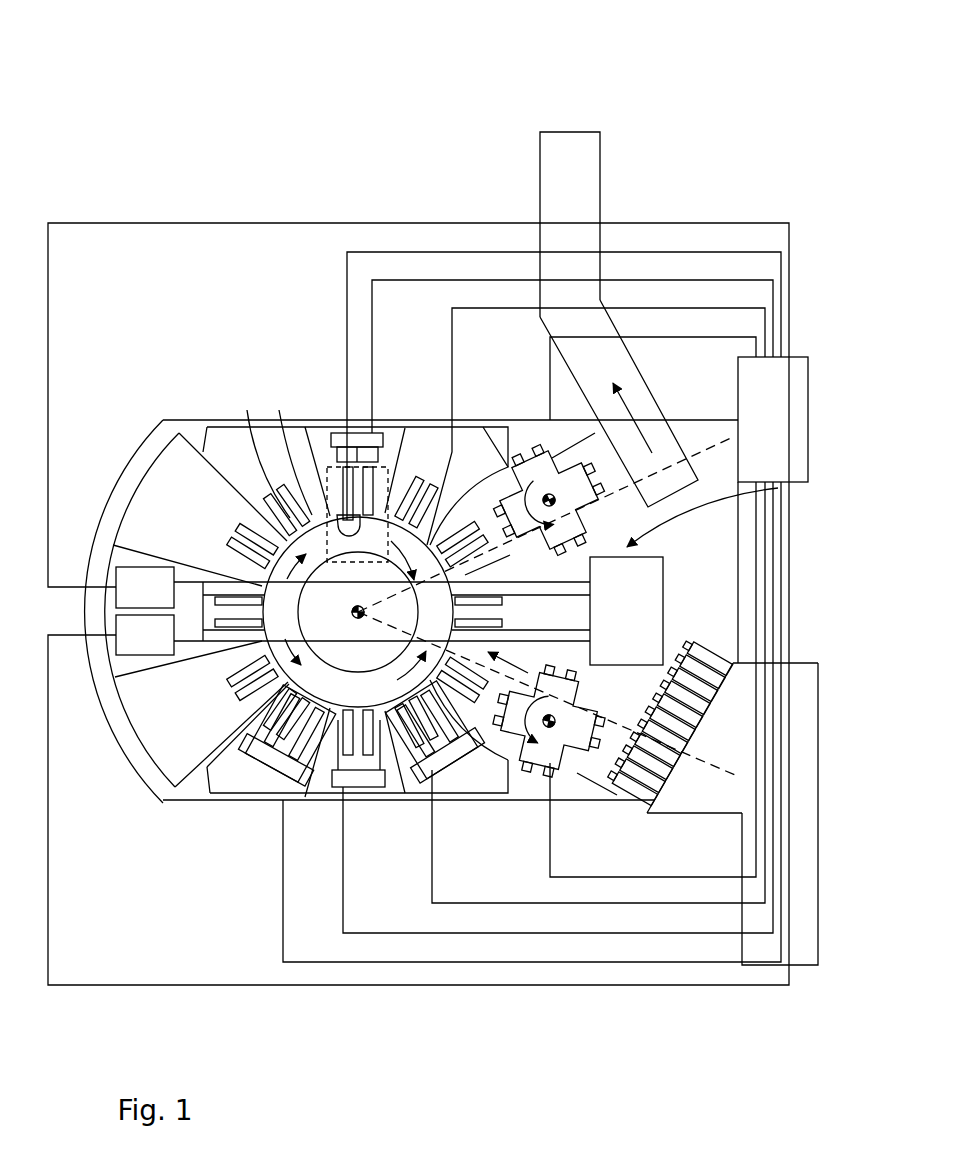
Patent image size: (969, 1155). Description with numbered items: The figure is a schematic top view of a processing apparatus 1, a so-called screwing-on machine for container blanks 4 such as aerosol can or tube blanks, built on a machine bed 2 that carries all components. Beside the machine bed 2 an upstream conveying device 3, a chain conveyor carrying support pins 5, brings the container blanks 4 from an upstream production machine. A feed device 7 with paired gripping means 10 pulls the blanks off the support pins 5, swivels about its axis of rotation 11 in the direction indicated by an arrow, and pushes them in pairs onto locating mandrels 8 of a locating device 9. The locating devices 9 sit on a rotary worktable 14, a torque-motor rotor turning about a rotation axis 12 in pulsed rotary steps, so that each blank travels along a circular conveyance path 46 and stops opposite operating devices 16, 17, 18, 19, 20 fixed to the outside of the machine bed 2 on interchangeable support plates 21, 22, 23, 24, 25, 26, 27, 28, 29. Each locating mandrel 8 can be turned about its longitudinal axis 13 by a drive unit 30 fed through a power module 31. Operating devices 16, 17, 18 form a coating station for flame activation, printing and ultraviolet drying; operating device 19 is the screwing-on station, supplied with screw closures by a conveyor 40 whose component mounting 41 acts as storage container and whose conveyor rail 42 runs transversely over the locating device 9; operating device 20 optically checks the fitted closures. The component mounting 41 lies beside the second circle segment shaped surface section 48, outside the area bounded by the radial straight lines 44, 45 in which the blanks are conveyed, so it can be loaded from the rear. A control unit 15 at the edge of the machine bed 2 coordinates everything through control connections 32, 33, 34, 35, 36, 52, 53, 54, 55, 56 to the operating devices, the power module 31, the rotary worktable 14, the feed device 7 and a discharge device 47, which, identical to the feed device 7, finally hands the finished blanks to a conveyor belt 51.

The processing apparatus 1 is at (398, 158).
The machine bed 2 is at (118, 733).
The upstream conveying device 3 is at (672, 826).
The container blanks 4 is at (628, 782).
The support pins 5 is at (718, 665).
The feed device 7 is at (548, 752).
The locating mandrels 8 is at (478, 700).
The locating device 9 is at (393, 428).
The gripping means 10 is at (520, 445).
The axis of rotation 11 is at (483, 427).
The rotation axis 12 is at (357, 614).
The longitudinal axis 13 is at (445, 775).
The rotary worktable 14 is at (190, 770).
The control unit 15 is at (773, 510).
The operating device 16 is at (482, 765).
The operating device 17 is at (367, 795).
The operating device 18 is at (290, 740).
The operating device 19 is at (122, 623).
The operating device 20 is at (338, 437).
The support plate 21 is at (420, 793).
The support plate 22 is at (340, 785).
The support plate 23 is at (228, 790).
The support plate 24 is at (162, 748).
The support plate 25 is at (122, 558).
The support plate 26 is at (165, 480).
The support plate 27 is at (222, 437).
The support plate 28 is at (322, 437).
The support plate 29 is at (433, 428).
The drive unit 30 is at (287, 561).
The power module 31 is at (258, 542).
The control connection 32 is at (612, 223).
The control connection 33 is at (648, 252).
The control connection 34 is at (668, 280).
The control connection 35 is at (690, 308).
The control connection 36 is at (735, 337).
The conveyor 40 is at (745, 501).
The component mounting 41 is at (650, 622).
The conveyor rail 42 is at (590, 585).
The straight line 44 is at (718, 772).
The straight line 45 is at (712, 445).
The conveyance path 46 is at (200, 645).
The discharge device 47 is at (541, 430).
The second circle segment shaped surface section 48 is at (703, 543).
The conveyor belt 51 is at (568, 135).
The control connection 52 is at (537, 987).
The control connection 53 is at (560, 963).
The control connection 54 is at (585, 935).
The control connection 55 is at (615, 905).
The control connection 56 is at (645, 878).